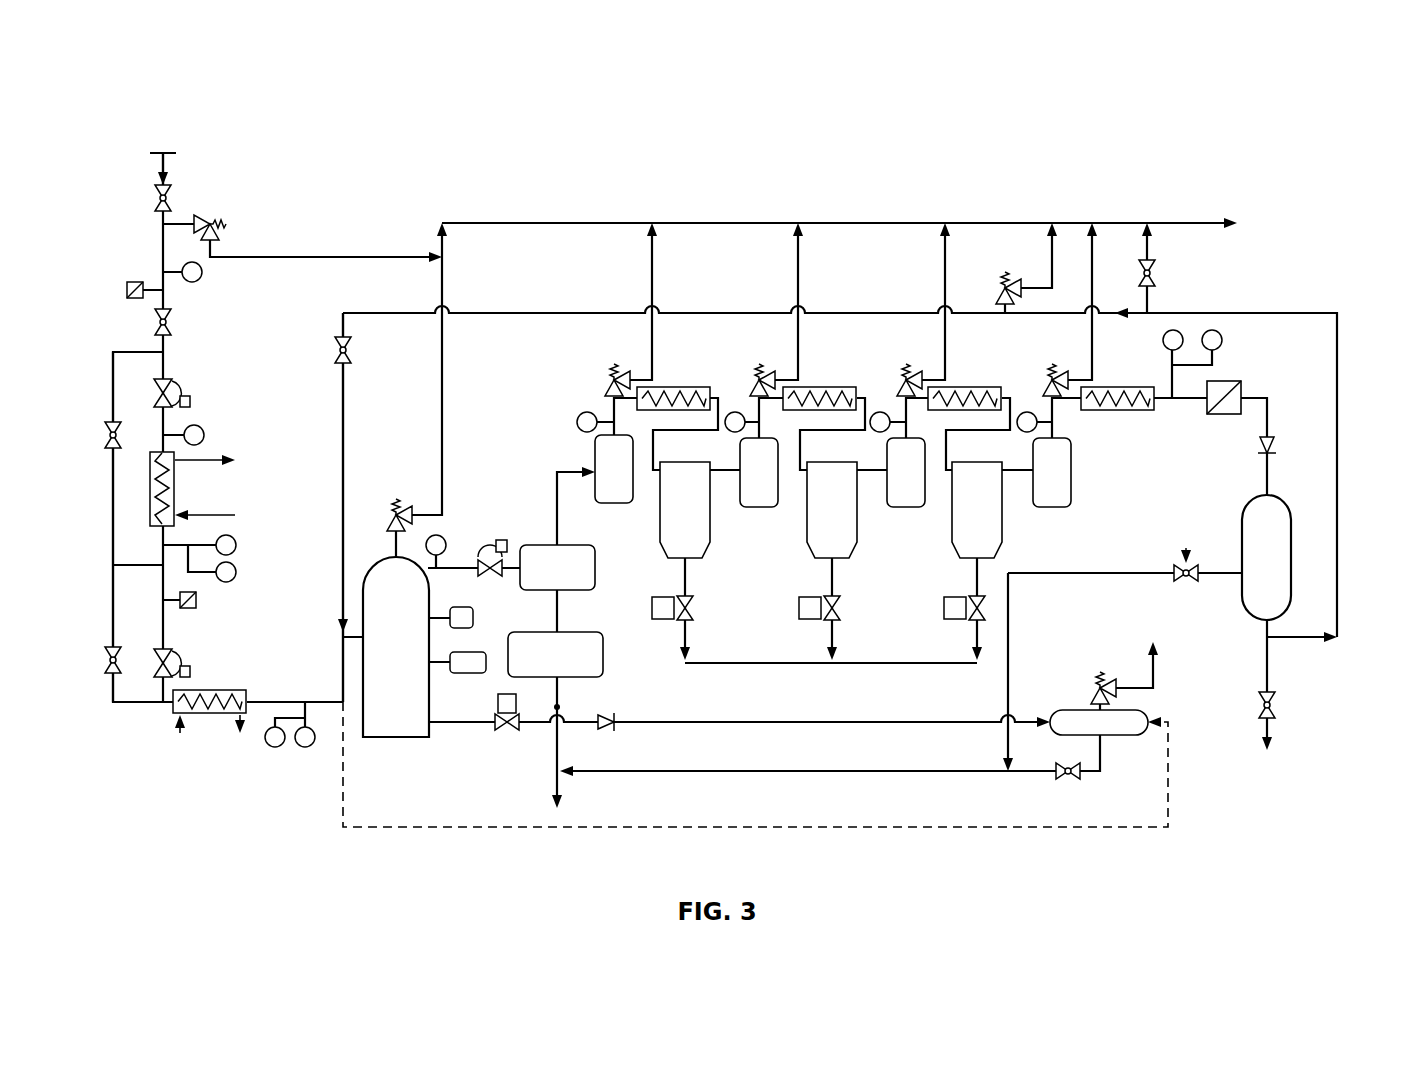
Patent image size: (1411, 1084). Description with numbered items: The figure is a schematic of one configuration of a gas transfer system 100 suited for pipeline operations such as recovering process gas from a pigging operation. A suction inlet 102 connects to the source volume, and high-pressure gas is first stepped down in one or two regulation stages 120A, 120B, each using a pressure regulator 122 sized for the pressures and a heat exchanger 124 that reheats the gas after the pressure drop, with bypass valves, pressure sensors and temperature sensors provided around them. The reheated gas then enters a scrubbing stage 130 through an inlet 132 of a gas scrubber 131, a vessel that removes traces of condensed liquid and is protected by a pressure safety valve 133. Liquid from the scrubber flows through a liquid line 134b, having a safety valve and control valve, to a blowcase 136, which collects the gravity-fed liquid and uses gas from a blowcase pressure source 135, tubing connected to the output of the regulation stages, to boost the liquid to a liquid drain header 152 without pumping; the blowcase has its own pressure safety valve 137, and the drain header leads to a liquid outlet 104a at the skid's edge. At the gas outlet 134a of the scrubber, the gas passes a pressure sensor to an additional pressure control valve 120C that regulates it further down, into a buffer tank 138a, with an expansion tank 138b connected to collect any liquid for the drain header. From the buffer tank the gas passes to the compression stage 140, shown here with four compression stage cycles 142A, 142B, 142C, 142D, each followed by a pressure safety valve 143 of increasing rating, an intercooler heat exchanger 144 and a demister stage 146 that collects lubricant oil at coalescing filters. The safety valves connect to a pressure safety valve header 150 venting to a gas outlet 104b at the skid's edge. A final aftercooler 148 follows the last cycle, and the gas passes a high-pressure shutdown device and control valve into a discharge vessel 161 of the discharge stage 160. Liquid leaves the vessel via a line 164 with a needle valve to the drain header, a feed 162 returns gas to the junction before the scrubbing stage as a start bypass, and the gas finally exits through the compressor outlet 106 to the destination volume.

The gas transfer system 100 is at (718, 474).
The suction inlet 102 is at (186, 139).
The liquid outlet 104a is at (632, 810).
The gas outlet 104b is at (1300, 282).
The compressor outlet 106 is at (1292, 835).
The regulation stage 120A is at (194, 441).
The regulation stage 120B is at (148, 684).
The pressure control valve 120C is at (490, 490).
The pressure regulator 122 is at (176, 386).
The heat exchanger 124 is at (178, 460).
The scrubbing stage 130 is at (378, 670).
The gas scrubber 131 is at (395, 738).
The inlet 132 is at (343, 624).
The pressure safety valve 133 is at (395, 440).
The gas outlet 134a is at (343, 595).
The liquid line 134b is at (690, 720).
The blowcase pressure source 135 is at (1097, 828).
The blowcase 136 is at (1113, 737).
The pressure safety valve 137 is at (1096, 672).
The buffer tank 138a is at (560, 545).
The expansion tank 138b is at (565, 632).
The compression stage 140 is at (816, 471).
The compression stage cycle 142A is at (593, 458).
The compression stage cycle 142B is at (761, 508).
The compression stage cycle 142C is at (907, 508).
The compression stage cycle 142D is at (1071, 470).
The pressure safety valve 143 is at (578, 350).
The intercooler heat exchanger 144 is at (705, 386).
The demister stage 146 is at (707, 542).
The aftercooler 148 is at (1141, 385).
The pressure safety valve header 150 is at (872, 221).
The liquid drain header 152 is at (820, 771).
The discharge stage 160 is at (1202, 578).
The discharge vessel 161 is at (1240, 518).
The feed 162 is at (1272, 645).
The line 164 is at (1238, 576).